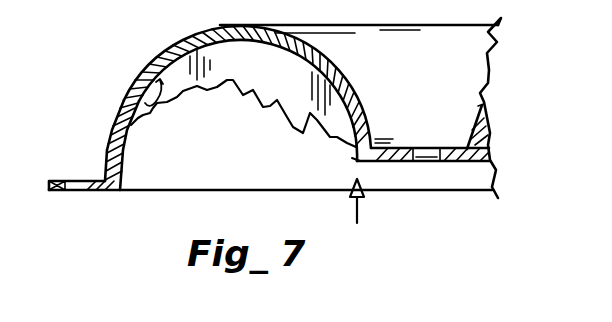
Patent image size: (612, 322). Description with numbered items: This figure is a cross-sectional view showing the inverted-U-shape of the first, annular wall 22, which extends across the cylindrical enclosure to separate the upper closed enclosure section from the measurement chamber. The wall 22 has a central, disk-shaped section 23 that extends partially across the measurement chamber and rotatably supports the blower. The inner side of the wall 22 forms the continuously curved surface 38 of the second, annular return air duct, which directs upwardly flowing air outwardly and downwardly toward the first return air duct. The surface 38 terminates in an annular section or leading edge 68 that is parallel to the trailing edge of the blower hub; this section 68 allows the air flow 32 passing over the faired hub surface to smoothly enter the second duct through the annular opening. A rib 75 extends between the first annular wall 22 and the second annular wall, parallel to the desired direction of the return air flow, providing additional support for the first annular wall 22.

The first annular wall 22 is at (160, 54).
The disk-shaped section 23 is at (398, 149).
The air flow 32 is at (363, 221).
The continuously curved surface 38 is at (145, 103).
The annular section 68 is at (355, 160).
The rib 75 is at (170, 95).